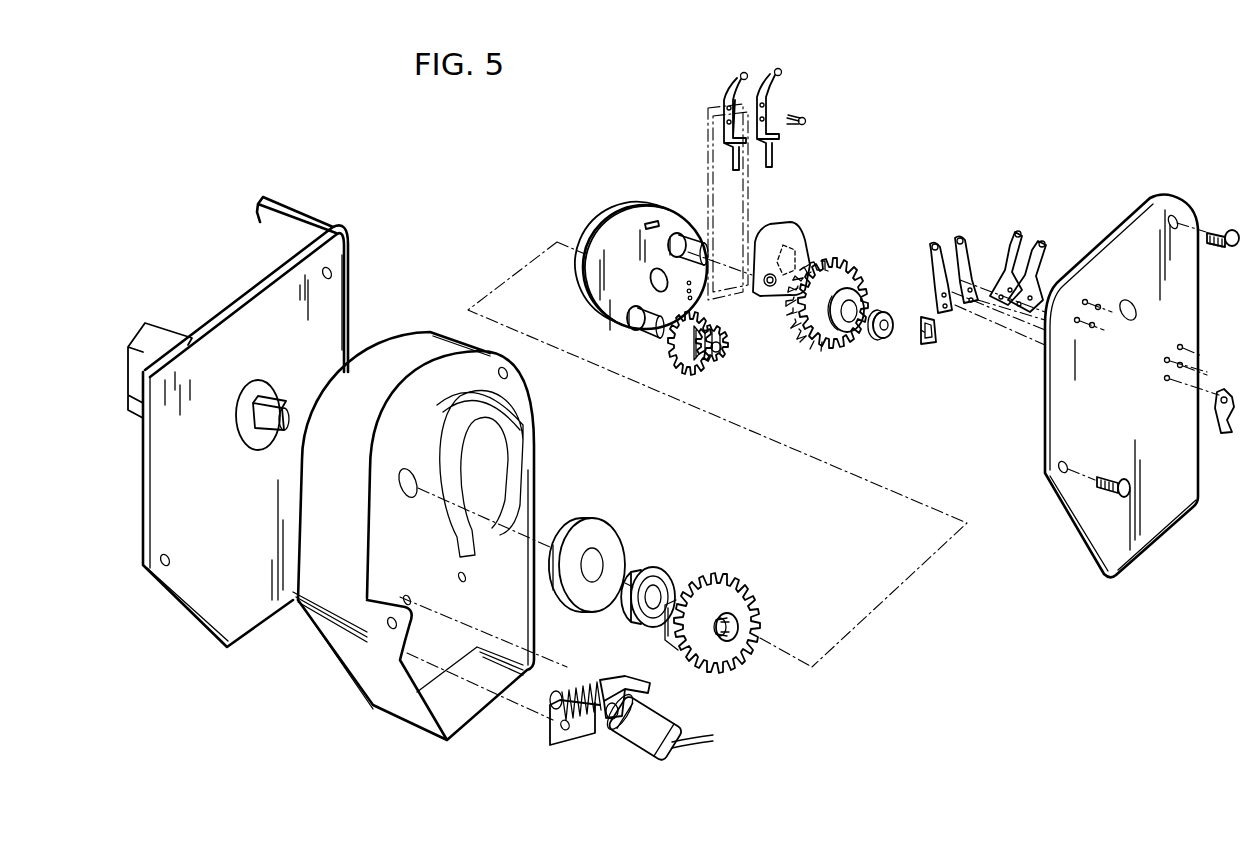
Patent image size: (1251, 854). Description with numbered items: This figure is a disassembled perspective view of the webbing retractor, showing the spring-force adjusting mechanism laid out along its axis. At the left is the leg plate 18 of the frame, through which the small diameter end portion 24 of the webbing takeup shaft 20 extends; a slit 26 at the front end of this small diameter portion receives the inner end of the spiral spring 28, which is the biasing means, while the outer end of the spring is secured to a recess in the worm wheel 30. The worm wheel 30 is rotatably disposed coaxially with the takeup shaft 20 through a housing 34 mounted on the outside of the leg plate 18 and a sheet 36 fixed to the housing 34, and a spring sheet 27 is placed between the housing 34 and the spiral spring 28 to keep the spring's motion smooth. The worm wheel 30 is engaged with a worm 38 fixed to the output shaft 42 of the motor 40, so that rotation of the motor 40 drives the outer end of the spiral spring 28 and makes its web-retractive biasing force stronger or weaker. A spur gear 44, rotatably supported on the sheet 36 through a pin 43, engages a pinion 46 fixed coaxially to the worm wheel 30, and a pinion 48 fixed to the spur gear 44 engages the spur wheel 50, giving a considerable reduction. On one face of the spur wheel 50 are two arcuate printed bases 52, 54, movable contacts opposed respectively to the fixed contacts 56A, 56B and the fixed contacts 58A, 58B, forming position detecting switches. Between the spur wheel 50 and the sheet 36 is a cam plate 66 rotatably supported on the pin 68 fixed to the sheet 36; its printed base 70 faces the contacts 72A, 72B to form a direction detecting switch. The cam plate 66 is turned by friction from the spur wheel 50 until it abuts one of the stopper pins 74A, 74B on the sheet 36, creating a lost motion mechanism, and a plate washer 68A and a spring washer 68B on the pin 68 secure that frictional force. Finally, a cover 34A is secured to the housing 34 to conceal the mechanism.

The leg plate 18 is at (345, 307).
The webbing takeup shaft 20 is at (160, 330).
The small diameter end portion 24 is at (283, 411).
The slit 26 is at (284, 432).
The spring sheet 27 is at (611, 532).
The spiral spring 28 is at (665, 572).
The worm wheel 30 is at (748, 598).
The housing 34 is at (430, 342).
The cover 34A is at (1143, 212).
The sheet 36 is at (680, 212).
The worm 38 is at (580, 690).
The motor 40 is at (660, 730).
The output shaft 42 is at (598, 690).
The pin 43 is at (652, 333).
The spur gear 44 is at (690, 368).
The pinion 46 is at (736, 641).
The pinion 48 is at (733, 343).
The spur wheel 50 is at (817, 343).
The printed base 52 is at (853, 286).
The printed base 54 is at (836, 278).
The fixed contact 56A is at (959, 240).
The fixed contact 56B is at (1018, 232).
The fixed contact 58A is at (935, 246).
The fixed contact 58B is at (1041, 244).
The cam plate 66 is at (780, 233).
The pin 68 is at (677, 236).
The plate washer 68A is at (883, 340).
The spring washer 68B is at (930, 344).
The printed base 70 is at (803, 243).
The contact 72A is at (735, 78).
The contact 72B is at (777, 77).
The stopper pin 74A is at (685, 275).
The stopper pin 74B is at (645, 224).